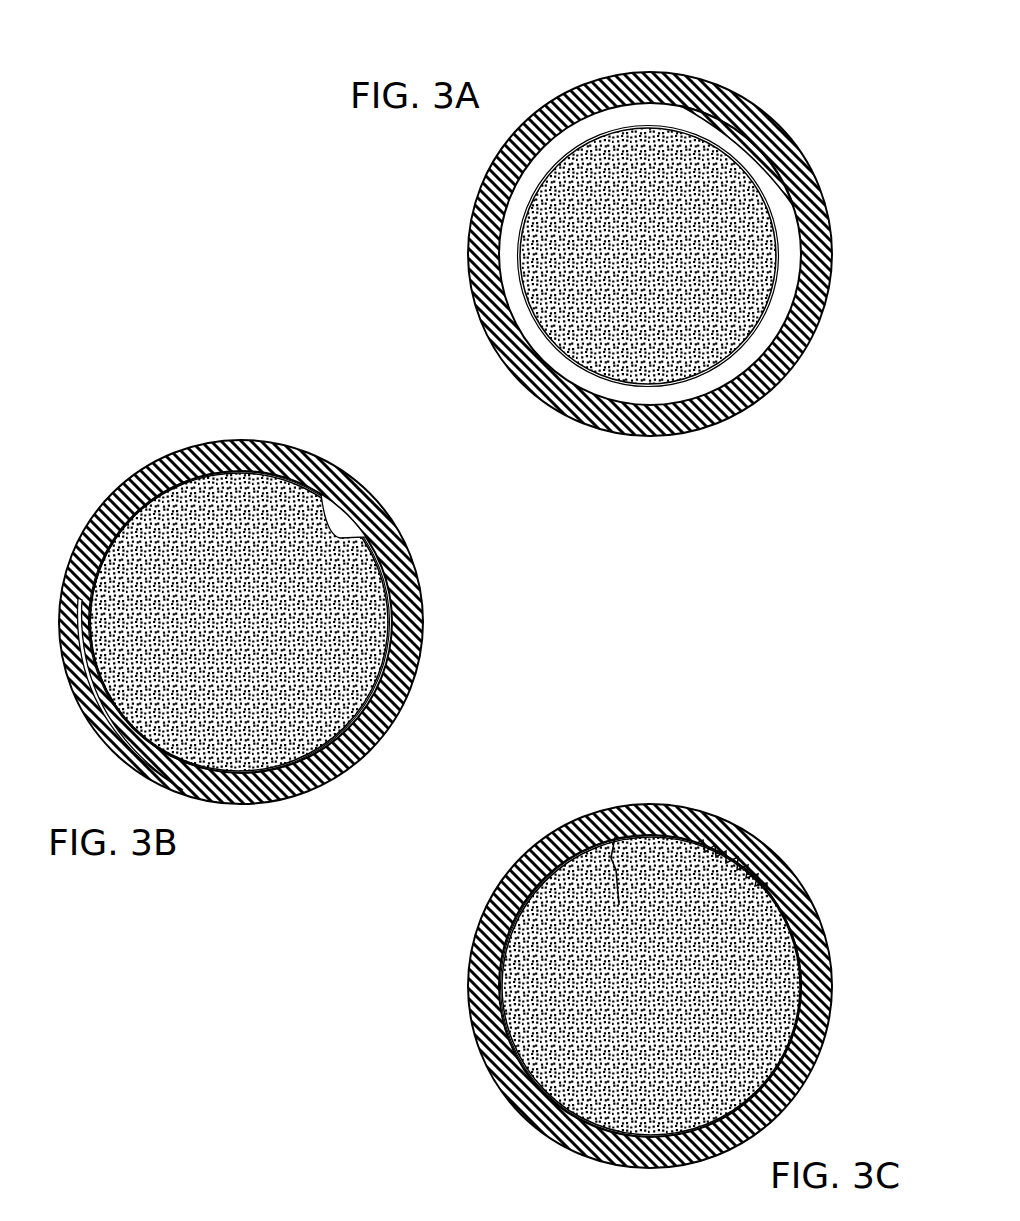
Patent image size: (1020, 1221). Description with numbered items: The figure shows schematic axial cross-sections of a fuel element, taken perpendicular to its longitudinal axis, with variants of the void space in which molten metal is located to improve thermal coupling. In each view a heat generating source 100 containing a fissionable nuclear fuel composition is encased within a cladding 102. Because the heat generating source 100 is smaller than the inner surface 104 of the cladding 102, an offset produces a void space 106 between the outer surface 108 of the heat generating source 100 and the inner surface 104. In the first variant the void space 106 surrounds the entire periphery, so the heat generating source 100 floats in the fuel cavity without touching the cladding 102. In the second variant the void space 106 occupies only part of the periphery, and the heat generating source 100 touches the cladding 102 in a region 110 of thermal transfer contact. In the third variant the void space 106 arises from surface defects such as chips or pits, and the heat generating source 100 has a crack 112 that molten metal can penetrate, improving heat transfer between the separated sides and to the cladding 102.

In FIG. 3A, the heat generating source 100 is at (618, 162).
In FIG. 3B, the heat generating source 100 is at (133, 578).
In FIG. 3C, the heat generating source 100 is at (568, 1050).
In FIG. 3A, the cladding 102 is at (488, 290).
In FIG. 3B, the cladding 102 is at (423, 628).
In FIG. 3C, the cladding 102 is at (817, 943).
In FIG. 3A, the inner surface of the cladding 104 is at (760, 161).
In FIG. 3B, the inner surface of the cladding 104 is at (360, 537).
In FIG. 3A, the void space 106 is at (530, 195).
In FIG. 3B, the void space 106 is at (390, 654).
In FIG. 3C, the void space 106 is at (480, 940).
In FIG. 3A, the outer surface of the heat generating source 108 is at (768, 192).
In FIG. 3B, the outer surface of the heat generating source 108 is at (390, 562).
In FIG. 3B, the region of thermal transfer contact 110 is at (84, 704).
In FIG. 3C, the crack 112 is at (615, 837).